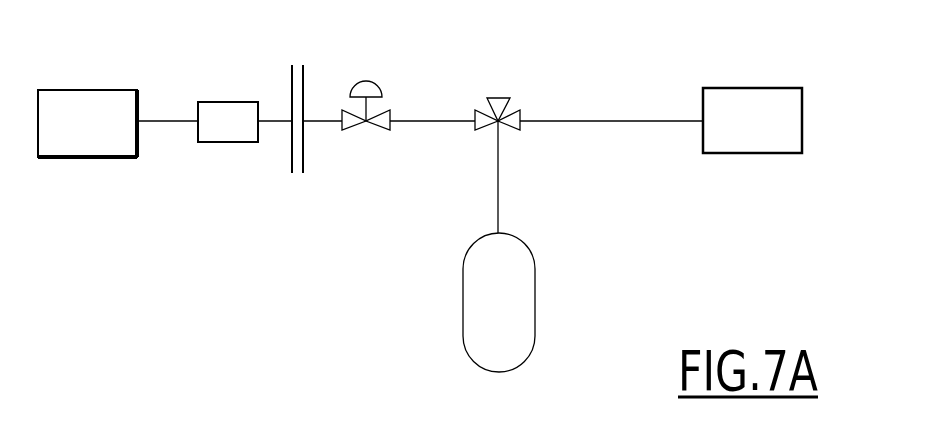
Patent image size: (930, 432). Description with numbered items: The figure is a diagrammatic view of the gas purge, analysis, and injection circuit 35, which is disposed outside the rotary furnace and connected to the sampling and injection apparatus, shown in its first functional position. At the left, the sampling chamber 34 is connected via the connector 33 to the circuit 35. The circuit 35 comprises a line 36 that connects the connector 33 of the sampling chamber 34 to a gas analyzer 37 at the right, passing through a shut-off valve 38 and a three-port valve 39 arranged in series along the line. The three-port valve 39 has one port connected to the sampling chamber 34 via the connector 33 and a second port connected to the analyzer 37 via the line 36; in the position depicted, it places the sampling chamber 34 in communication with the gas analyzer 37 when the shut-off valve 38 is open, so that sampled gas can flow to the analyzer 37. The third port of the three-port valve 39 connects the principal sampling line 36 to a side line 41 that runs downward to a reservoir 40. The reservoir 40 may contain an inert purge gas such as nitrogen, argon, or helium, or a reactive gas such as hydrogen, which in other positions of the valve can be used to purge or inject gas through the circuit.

The connector 33 is at (225, 106).
The sampling chamber 34 is at (72, 136).
The gas purge, analysis, and injection circuit 35 is at (556, 58).
The line 36 is at (618, 120).
The gas analyzer 37 is at (739, 134).
The shut-off valve 38 is at (375, 125).
The three-port valve 39 is at (501, 97).
The reservoir 40 is at (527, 270).
The side line 41 is at (498, 187).